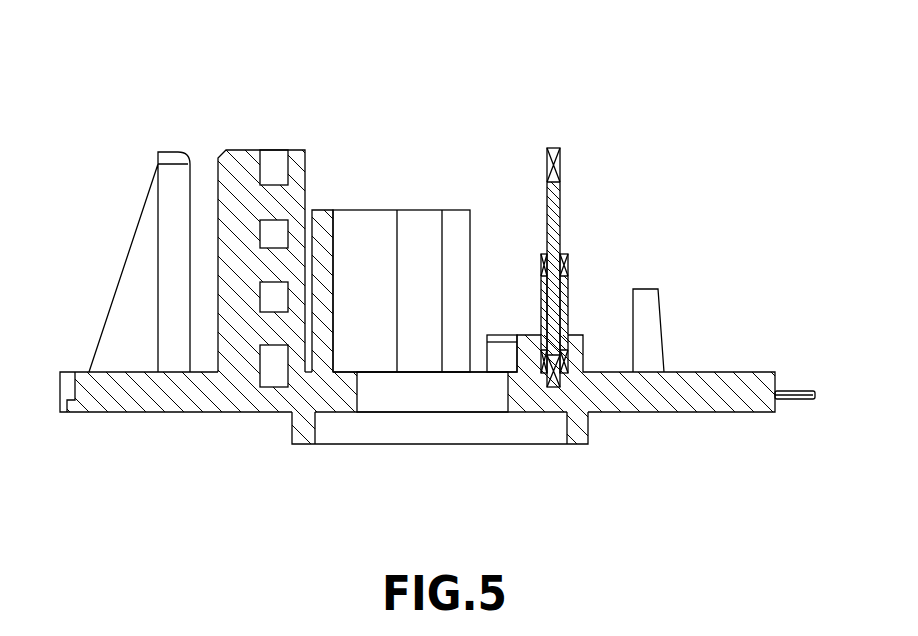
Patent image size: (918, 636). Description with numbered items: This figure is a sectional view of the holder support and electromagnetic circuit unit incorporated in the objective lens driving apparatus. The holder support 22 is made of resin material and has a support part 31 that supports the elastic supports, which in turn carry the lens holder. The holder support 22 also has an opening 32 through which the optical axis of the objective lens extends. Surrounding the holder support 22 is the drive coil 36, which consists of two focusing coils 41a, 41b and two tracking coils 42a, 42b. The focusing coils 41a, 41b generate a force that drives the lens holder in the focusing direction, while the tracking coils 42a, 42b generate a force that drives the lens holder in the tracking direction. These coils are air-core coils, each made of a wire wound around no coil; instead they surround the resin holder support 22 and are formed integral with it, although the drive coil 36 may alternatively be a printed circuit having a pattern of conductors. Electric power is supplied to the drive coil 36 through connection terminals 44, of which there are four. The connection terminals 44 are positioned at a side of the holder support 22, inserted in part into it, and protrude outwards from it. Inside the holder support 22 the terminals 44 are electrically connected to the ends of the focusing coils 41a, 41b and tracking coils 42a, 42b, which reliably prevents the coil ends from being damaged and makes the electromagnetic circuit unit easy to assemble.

The holder support 22 is at (720, 386).
The support part 31 is at (242, 167).
The opening 32 is at (508, 390).
The drive coil 36 is at (730, 52).
The focusing coil 41a is at (570, 264).
The focusing coil 41b is at (545, 252).
The tracking coil 42a is at (552, 148).
The tracking coil 42b is at (553, 267).
The connection terminal 44 is at (796, 388).